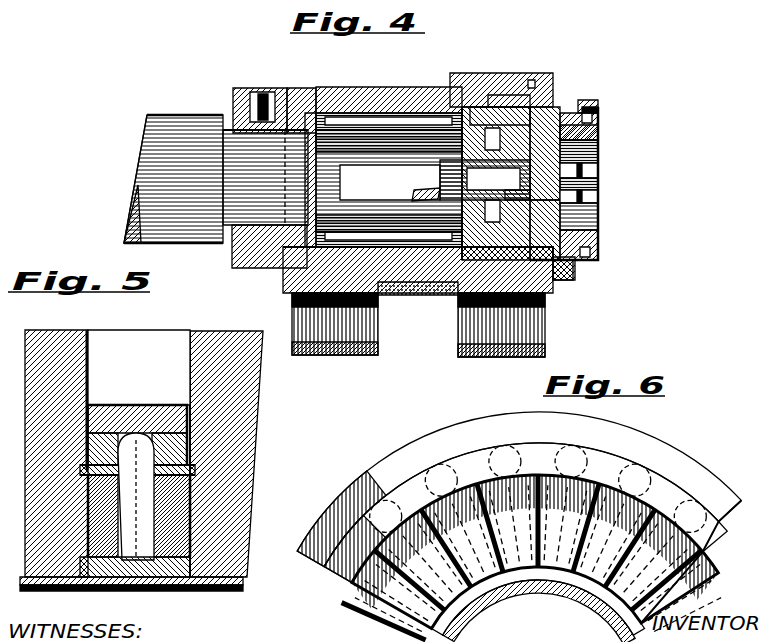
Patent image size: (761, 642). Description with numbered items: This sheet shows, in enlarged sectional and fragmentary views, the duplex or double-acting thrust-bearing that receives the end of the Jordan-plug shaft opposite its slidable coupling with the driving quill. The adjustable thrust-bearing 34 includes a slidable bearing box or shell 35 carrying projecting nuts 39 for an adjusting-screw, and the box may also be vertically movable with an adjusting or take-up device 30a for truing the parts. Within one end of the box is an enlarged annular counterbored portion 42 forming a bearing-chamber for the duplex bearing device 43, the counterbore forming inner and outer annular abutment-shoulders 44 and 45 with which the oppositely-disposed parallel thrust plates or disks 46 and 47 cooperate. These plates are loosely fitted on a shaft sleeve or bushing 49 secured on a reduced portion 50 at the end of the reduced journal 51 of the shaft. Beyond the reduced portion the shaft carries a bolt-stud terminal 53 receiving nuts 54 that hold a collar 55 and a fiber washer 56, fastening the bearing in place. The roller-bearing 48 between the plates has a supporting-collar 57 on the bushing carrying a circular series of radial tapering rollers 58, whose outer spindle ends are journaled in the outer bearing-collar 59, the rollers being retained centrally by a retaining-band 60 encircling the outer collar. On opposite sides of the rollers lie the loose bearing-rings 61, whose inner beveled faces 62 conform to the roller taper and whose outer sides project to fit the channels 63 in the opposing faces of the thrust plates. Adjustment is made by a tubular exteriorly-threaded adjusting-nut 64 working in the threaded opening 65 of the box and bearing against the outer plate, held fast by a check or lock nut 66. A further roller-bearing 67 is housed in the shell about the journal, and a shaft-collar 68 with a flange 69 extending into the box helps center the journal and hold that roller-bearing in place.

In FIG. 4, the adjusting or take-up device 30a is at (432, 295).
In FIG. 4, the adjustable thrust-bearing 34 is at (312, 87).
In FIG. 4, the bearing box or shell 35 is at (428, 112).
In FIG. 4, the projecting nuts 39 is at (294, 312).
In FIG. 4, the annular counterbored portion 42 is at (507, 105).
In FIG. 4, the double-acting or duplex bearing device 43 is at (540, 106).
In FIG. 4, the inner annular abutment-shoulder 44 is at (472, 86).
In FIG. 4, the outer annular abutment-shoulder 45 is at (552, 113).
In FIG. 4, the inner thrust plate or disk 46 is at (497, 100).
In FIG. 5, the inner thrust plate or disk 46 is at (90, 349).
In FIG. 4, the outer thrust plate or disk 47 is at (592, 114).
In FIG. 5, the outer thrust plate or disk 47 is at (194, 336).
In FIG. 4, the roller-bearing 48 is at (553, 285).
In FIG. 5, the roller-bearing 48 is at (139, 367).
In FIG. 6, the roller-bearing 48 is at (355, 496).
In FIG. 4, the shaft sleeve or bushing 49 is at (512, 188).
In FIG. 5, the shaft sleeve or bushing 49 is at (131, 597).
In FIG. 6, the shaft sleeve or bushing 49 is at (563, 597).
In FIG. 4, the reduced portion 50 is at (496, 180).
In FIG. 4, the reduced journal 51 is at (389, 181).
In FIG. 4, the bolt-stud terminal 53 is at (600, 182).
In FIG. 4, the nuts 54 is at (600, 173).
In FIG. 4, the collar 55 is at (600, 218).
In FIG. 4, the fiber washer 56 is at (600, 150).
In FIG. 4, the supporting-collar 57 is at (600, 230).
In FIG. 5, the supporting-collar 57 is at (166, 582).
In FIG. 6, the supporting-collar 57 is at (530, 583).
In FIG. 4, the antifriction tapering rollers 58 is at (603, 127).
In FIG. 5, the antifriction tapering rollers 58 is at (192, 487).
In FIG. 6, the antifriction tapering rollers 58 is at (677, 563).
In FIG. 4, the outer bearing-collar 59 is at (442, 180).
In FIG. 5, the outer bearing-collar 59 is at (192, 466).
In FIG. 6, the outer bearing-collar 59 is at (633, 467).
In FIG. 5, the retaining-band 60 is at (165, 418).
In FIG. 6, the retaining-band 60 is at (483, 428).
In FIG. 4, the loose bearing-rings 61 is at (620, 260).
In FIG. 5, the loose bearing-rings 61 is at (85, 490).
In FIG. 5, the inner beveled faces 62 is at (85, 520).
In FIG. 5, the channels 63 is at (85, 467).
In FIG. 4, the tubular exteriorly-threaded adjusting-nut 64 is at (600, 130).
In FIG. 4, the threaded opening 65 is at (583, 103).
In FIG. 4, the check or lock nut 66 is at (572, 266).
In FIG. 4, the roller-bearing 67 is at (388, 112).
In FIG. 4, the shaft-collar 68 is at (250, 248).
In FIG. 4, the flange 69 is at (310, 108).